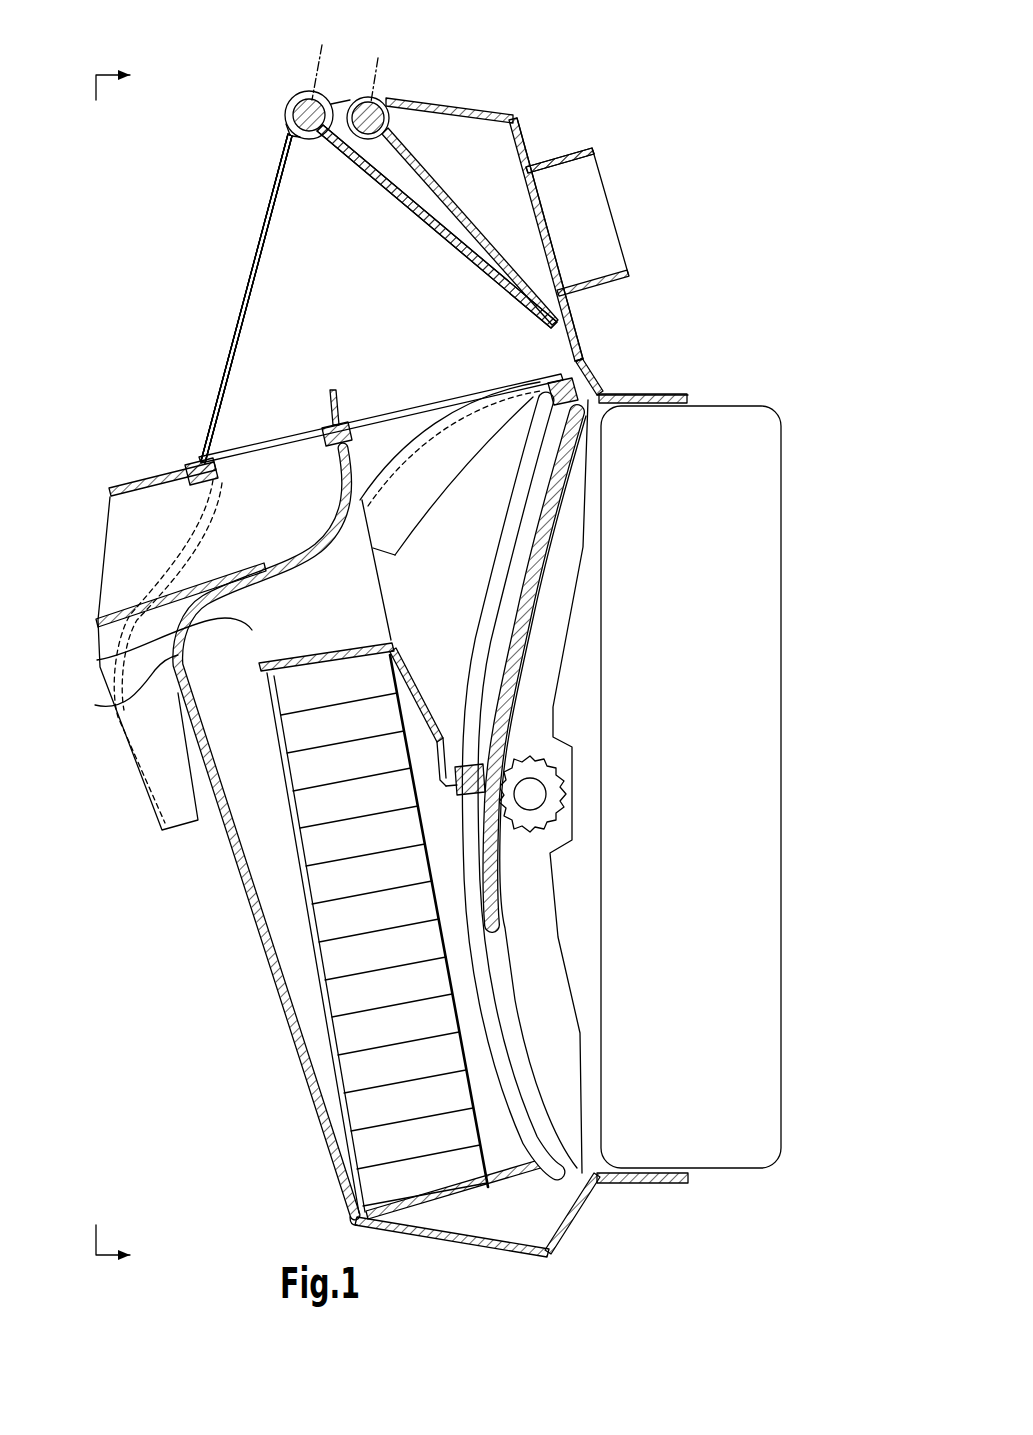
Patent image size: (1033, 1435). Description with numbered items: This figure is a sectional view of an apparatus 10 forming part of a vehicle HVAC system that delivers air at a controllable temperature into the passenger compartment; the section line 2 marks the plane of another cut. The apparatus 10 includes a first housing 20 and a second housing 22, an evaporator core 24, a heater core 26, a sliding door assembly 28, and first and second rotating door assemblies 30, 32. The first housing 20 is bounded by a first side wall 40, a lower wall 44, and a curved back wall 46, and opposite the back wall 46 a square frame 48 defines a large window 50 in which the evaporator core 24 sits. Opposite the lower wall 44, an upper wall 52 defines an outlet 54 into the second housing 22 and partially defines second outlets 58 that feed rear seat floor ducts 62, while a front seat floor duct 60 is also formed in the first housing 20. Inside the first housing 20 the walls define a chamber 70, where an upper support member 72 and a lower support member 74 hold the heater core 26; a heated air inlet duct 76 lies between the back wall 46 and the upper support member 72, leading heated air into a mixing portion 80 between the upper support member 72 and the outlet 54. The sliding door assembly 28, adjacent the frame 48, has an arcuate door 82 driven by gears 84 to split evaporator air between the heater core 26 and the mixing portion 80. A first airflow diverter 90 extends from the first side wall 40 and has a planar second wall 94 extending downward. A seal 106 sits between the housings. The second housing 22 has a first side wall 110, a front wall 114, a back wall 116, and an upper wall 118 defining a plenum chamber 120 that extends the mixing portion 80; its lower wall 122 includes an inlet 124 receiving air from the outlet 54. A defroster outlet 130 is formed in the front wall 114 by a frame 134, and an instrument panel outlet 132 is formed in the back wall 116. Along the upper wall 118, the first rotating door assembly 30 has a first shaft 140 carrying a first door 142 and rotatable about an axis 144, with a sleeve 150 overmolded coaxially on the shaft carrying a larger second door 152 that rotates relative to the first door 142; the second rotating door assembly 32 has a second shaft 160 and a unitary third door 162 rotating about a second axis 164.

The apparatus 10 is at (155, 222).
The section line 2 is at (126, 662).
The first housing 20 is at (268, 946).
The second housing 22 is at (214, 393).
The evaporator core 24 is at (732, 1172).
The heater core 26 is at (496, 1162).
The sliding door assembly 28 is at (540, 635).
The first rotating door assembly 30 is at (348, 160).
The second rotating door assembly 32 is at (424, 166).
The first side wall 40 is at (600, 393).
The lower wall 44 is at (483, 1246).
The curved back wall 46 is at (100, 705).
The frame 48 is at (662, 396).
The window 50 is at (706, 397).
The upper wall 52 is at (576, 387).
The outlet 54 is at (393, 416).
The second outlets 58 is at (246, 440).
The front seat floor duct 60 is at (185, 803).
The rear seat floor ducts 62 is at (128, 550).
The chamber 70 is at (455, 662).
The upper support member 72 is at (315, 650).
The lower support member 74 is at (443, 1216).
The heated air inlet duct 76 is at (98, 660).
The mixing portion 80 is at (459, 558).
The arcuate door 82 is at (494, 868).
The gears 84 is at (548, 800).
The first airflow diverter 90 is at (466, 482).
The second wall 94 is at (492, 437).
The seal 106 is at (187, 469).
The first side wall 110 is at (485, 152).
The front wall 114 is at (527, 146).
The back wall 116 is at (225, 380).
The upper wall 118 is at (490, 118).
The plenum chamber 120 is at (405, 343).
The lower wall 122 is at (195, 466).
The inlet 124 is at (558, 363).
The defroster outlet 130 is at (587, 228).
The instrument panel outlet 132 is at (250, 286).
The frame 134 is at (577, 162).
The first shaft 140 is at (302, 92).
The first door 142 is at (385, 184).
The axis 144 is at (319, 55).
The sleeve 150 is at (294, 112).
The second door 152 is at (455, 245).
The second shaft 160 is at (381, 100).
The third door 162 is at (438, 190).
The second axis 164 is at (369, 82).